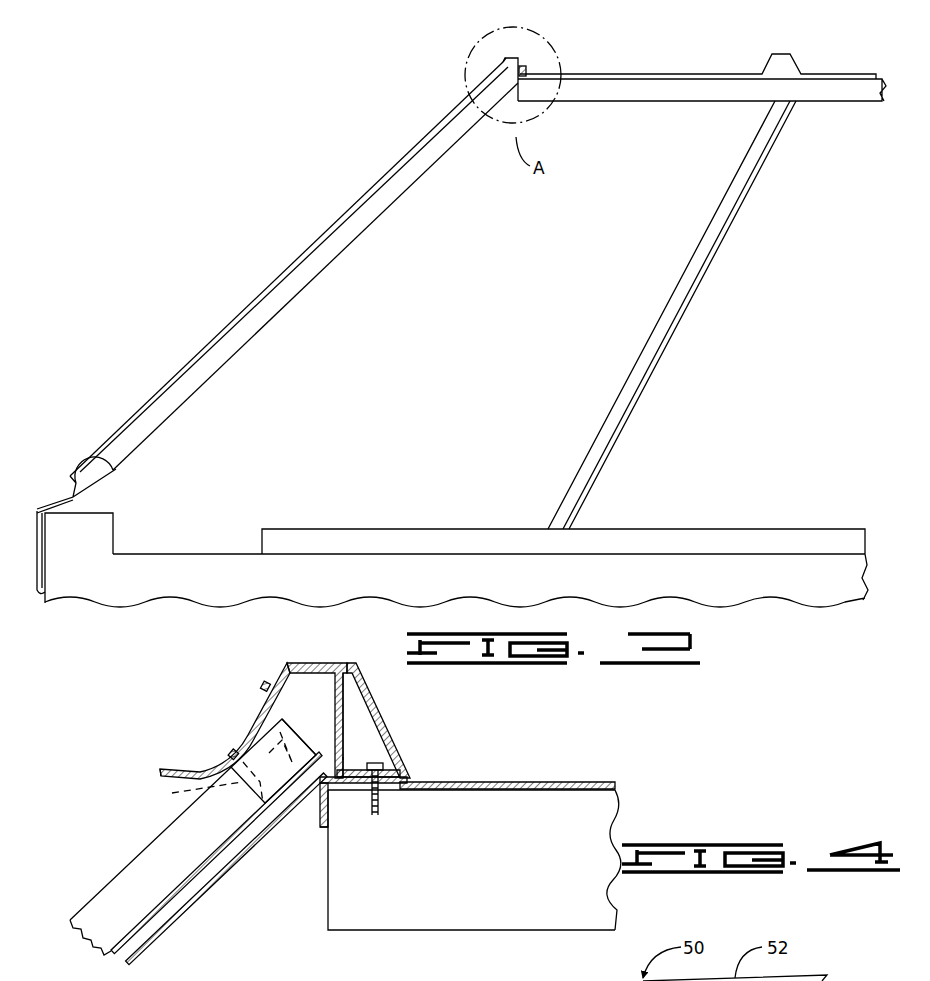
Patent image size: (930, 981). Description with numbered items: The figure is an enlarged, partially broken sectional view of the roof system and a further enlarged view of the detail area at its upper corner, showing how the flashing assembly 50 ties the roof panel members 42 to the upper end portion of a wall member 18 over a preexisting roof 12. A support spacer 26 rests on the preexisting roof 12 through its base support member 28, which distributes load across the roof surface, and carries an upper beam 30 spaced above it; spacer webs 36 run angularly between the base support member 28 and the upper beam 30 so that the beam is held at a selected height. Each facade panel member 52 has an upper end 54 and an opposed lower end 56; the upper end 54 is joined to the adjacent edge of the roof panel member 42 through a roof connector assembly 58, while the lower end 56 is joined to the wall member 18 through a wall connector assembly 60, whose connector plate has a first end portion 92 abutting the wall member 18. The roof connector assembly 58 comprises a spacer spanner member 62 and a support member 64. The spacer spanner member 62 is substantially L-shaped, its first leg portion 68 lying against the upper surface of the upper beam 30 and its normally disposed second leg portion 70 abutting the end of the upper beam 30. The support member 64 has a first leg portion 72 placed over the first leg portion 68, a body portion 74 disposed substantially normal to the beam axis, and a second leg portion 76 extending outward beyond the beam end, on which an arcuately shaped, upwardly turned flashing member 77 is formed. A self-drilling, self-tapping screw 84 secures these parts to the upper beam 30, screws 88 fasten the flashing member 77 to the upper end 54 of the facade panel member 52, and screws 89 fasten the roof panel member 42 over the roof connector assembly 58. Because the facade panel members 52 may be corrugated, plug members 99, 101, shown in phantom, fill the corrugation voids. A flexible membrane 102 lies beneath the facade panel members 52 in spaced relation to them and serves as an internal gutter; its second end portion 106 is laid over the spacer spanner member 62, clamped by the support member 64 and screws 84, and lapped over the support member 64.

In FIG. 3, the preexisting roof 12 is at (143, 588).
In FIG. 3, the wall member 18 is at (88, 567).
In FIG. 3, the support spacer 26 is at (700, 298).
In FIG. 3, the base support member 28 is at (628, 529).
In FIG. 3, the upper beam 30 is at (583, 104).
In FIG. 4, the upper beam 30 is at (512, 873).
In FIG. 3, the spacer web 36 is at (666, 307).
In FIG. 3, the roof panel member 42 is at (665, 74).
In FIG. 4, the roof panel member 42 is at (533, 781).
In FIG. 3, the flashing assembly 50 is at (349, 178).
In FIG. 4, the flashing assembly 50 is at (136, 851).
In FIG. 3, the facade panel member 52 is at (402, 156).
In FIG. 4, the facade panel member 52 is at (150, 846).
In FIG. 3, the upper end 54 is at (482, 84).
In FIG. 4, the upper end 54 is at (300, 797).
In FIG. 3, the lower end 56 is at (162, 386).
In FIG. 4, the lower end 56 is at (505, 980).
In FIG. 3, the roof connector assembly 58 is at (534, 65).
In FIG. 4, the roof connector assembly 58 is at (244, 728).
In FIG. 3, the wall connector assembly 60 is at (55, 490).
In FIG. 4, the spacer spanner member 62 is at (338, 815).
In FIG. 4, the support member 64 is at (350, 732).
In FIG. 4, the first leg portion 68 is at (385, 793).
In FIG. 4, the second leg portion 70 is at (323, 828).
In FIG. 4, the first leg portion 72 is at (400, 764).
In FIG. 4, the body portion 74 is at (343, 757).
In FIG. 4, the second leg portion 76 is at (305, 663).
In FIG. 3, the flashing member 77 is at (497, 66).
In FIG. 4, the flashing member 77 is at (185, 768).
In FIG. 4, the self-drilling, self-tapping screw 84 is at (400, 754).
In FIG. 4, the self-drilling, self-tapping screw 88 is at (234, 752).
In FIG. 4, the self-tapping, self-drilling screw 89 is at (264, 684).
In FIG. 3, the first end portion 92 is at (37, 592).
In FIG. 4, the plug member 99 is at (218, 767).
In FIG. 4, the plug member 101 is at (528, 977).
In FIG. 3, the flexible membrane 102 is at (360, 233).
In FIG. 4, the flexible membrane 102 is at (155, 935).
In FIG. 4, the second end portion 106 is at (366, 702).